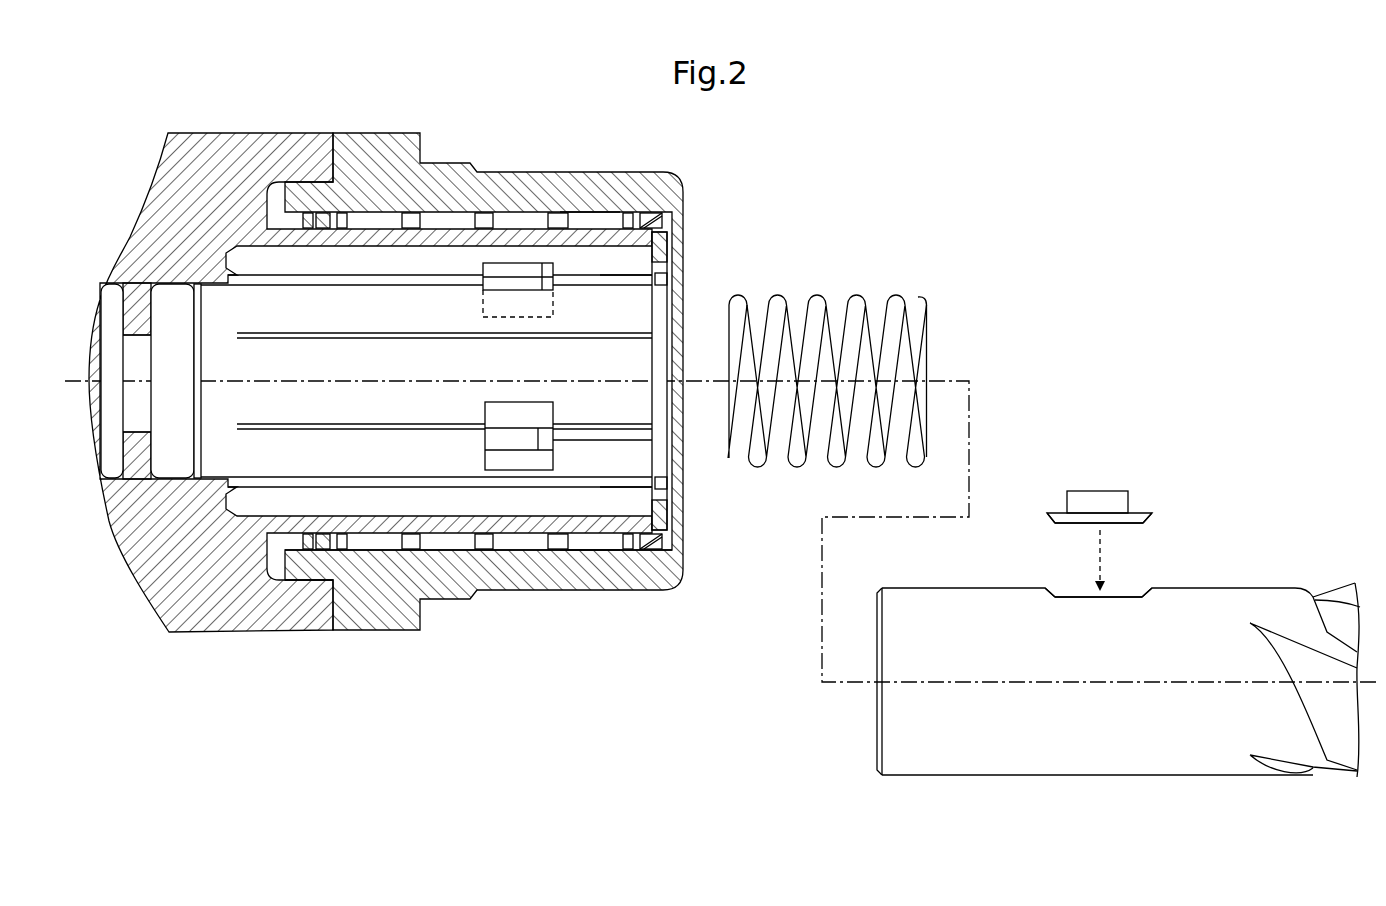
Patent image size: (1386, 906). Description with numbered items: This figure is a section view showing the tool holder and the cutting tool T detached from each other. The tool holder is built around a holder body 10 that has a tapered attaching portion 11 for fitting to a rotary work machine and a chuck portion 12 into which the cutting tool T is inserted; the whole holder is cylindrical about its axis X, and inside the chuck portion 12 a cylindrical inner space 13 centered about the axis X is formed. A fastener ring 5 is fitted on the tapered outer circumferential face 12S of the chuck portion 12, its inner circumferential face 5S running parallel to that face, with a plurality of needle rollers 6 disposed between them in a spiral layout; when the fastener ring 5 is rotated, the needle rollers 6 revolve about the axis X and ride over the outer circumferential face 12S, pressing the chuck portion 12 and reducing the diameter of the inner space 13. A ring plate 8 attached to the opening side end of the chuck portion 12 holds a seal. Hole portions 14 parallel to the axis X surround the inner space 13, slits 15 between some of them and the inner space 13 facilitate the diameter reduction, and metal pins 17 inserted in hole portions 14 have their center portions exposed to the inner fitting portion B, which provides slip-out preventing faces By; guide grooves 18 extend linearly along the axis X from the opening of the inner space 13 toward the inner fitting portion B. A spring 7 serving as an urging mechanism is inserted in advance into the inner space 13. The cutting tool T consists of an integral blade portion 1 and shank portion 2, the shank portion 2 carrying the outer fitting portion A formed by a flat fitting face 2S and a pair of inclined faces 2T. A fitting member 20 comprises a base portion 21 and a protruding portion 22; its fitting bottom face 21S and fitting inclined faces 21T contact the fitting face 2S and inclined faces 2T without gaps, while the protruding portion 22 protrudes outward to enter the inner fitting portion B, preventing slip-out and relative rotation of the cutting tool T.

The blade portion 1 is at (1346, 778).
The shank portion 2 is at (955, 775).
The fitting face 2S is at (1080, 597).
The inclined faces 2T is at (1050, 592).
The fastener ring 5 is at (562, 172).
The inner circumferential face 5S is at (592, 226).
The needle rollers 6 is at (508, 212).
The spring 7 is at (857, 295).
The ring plate 8 is at (668, 246).
The holder body 10 is at (391, 435).
The tapered attaching portion 11 is at (215, 630).
The chuck portion 12 is at (520, 560).
The outer circumferential face 12S is at (592, 540).
The inner space 13 is at (220, 462).
The hole portions 14 is at (440, 262).
The slits 15 is at (330, 333).
The pins 17 is at (518, 300).
The guide grooves 18 is at (620, 290).
The fitting member 20 is at (1112, 498).
The base portion 21 is at (1110, 513).
The fitting inclined faces 21T is at (1050, 522).
The fitting bottom face 21S is at (1080, 523).
The protruding portion 22 is at (1073, 491).
The outer fitting portion A is at (1118, 590).
The inner fitting portion B is at (497, 300).
The slip-out preventing faces By is at (551, 282).
The cutting tool T is at (1195, 782).
The axis X is at (711, 526).